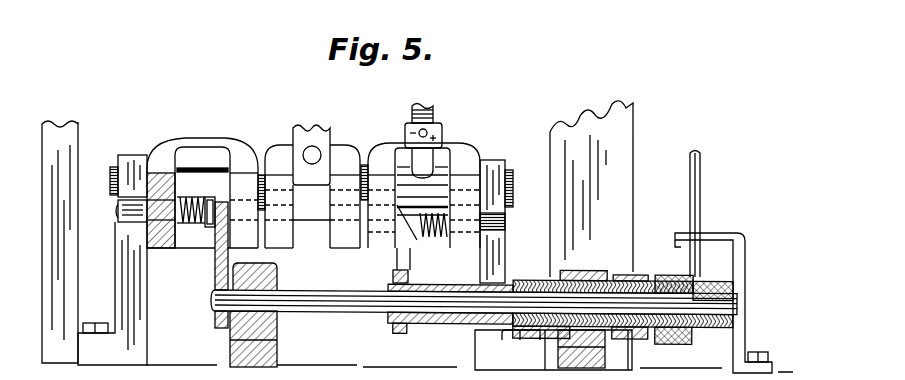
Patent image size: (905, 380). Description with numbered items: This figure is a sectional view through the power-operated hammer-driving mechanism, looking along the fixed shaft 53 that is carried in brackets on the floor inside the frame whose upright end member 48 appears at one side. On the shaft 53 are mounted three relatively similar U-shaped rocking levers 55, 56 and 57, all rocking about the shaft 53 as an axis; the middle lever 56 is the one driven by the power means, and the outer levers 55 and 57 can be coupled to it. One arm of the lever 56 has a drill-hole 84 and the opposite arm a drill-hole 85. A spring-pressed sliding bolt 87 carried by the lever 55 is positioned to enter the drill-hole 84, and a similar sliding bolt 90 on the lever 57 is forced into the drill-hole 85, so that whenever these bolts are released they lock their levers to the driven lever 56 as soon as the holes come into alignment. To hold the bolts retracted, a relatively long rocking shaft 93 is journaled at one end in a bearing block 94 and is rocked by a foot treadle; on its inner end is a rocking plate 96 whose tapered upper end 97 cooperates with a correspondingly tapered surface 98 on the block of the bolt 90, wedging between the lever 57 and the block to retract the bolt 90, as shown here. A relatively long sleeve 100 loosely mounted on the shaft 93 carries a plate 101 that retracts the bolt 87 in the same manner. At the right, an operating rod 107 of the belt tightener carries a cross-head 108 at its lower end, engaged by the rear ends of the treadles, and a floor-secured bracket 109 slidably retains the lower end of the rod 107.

The upright end member 48 is at (558, 152).
The shaft 53 is at (365, 165).
The U-shaped rocking lever 55 is at (462, 155).
The U-shaped rocking lever 56 is at (278, 152).
The U-shaped rocking lever 57 is at (210, 143).
The drill-hole 84 is at (352, 225).
The drill-hole 85 is at (282, 213).
The sliding bolt 87 is at (507, 222).
The sliding bolt 90 is at (118, 222).
The rocking shaft 93 is at (347, 317).
The bearing block 94 is at (230, 337).
The rocking plate 96 is at (217, 272).
The tapered upper end 97 is at (220, 198).
The tapered surface 98 is at (211, 224).
The sleeve 100 is at (452, 323).
The plate 101 is at (393, 275).
The operating rod 107 is at (702, 206).
The cross-head 108 is at (722, 277).
The bracket 109 is at (742, 322).